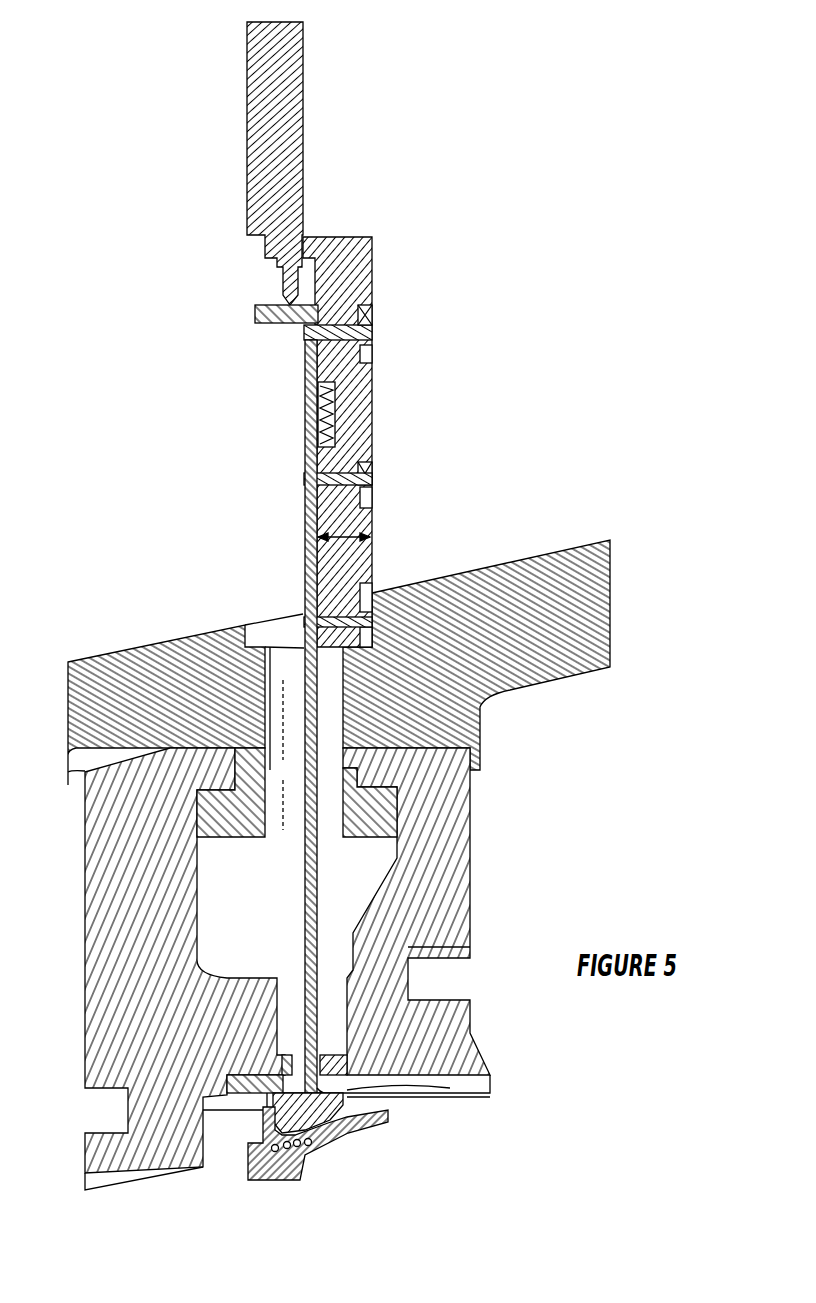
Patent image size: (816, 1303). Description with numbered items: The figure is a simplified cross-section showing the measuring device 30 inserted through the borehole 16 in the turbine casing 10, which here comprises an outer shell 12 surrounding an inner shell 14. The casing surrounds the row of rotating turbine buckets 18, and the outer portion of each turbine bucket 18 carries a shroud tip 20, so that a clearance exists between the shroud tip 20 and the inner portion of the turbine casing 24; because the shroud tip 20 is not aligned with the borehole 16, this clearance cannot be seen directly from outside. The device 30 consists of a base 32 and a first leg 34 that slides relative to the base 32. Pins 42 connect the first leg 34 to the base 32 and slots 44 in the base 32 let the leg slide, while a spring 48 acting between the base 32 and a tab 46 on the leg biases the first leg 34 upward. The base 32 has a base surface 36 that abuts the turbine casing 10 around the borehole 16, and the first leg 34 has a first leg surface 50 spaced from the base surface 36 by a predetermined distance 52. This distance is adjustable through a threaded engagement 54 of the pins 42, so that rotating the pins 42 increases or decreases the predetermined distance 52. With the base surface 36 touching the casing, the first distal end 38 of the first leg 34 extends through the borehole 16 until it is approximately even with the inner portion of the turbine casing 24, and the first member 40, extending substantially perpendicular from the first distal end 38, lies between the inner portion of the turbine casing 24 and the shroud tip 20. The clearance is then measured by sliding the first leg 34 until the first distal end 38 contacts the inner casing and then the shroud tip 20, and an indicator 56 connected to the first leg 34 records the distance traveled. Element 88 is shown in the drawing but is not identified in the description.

The turbine casing 10 is at (629, 552).
The outer shell 12 is at (513, 562).
The inner shell 14 is at (82, 1020).
The borehole 16 is at (177, 635).
The turbine bucket 18 is at (263, 1180).
The shroud tip 20 is at (343, 1100).
The inner portion of the turbine casing 24 is at (345, 1085).
The measuring device 30 is at (478, 212).
The base 32 is at (372, 397).
The first leg 34 is at (303, 569).
The base surface 36 is at (372, 525).
The first distal end 38 is at (312, 1103).
The first member 40 is at (352, 1078).
The pins 42 is at (372, 324).
The slots 44 is at (372, 357).
The tab 46 is at (305, 385).
The spring 48 is at (305, 432).
The first leg surface 50 is at (327, 596).
The predetermined distance 52 is at (373, 562).
The threaded engagement 54 is at (305, 484).
The indicator 56 is at (303, 70).
The stop plate 88 is at (305, 323).